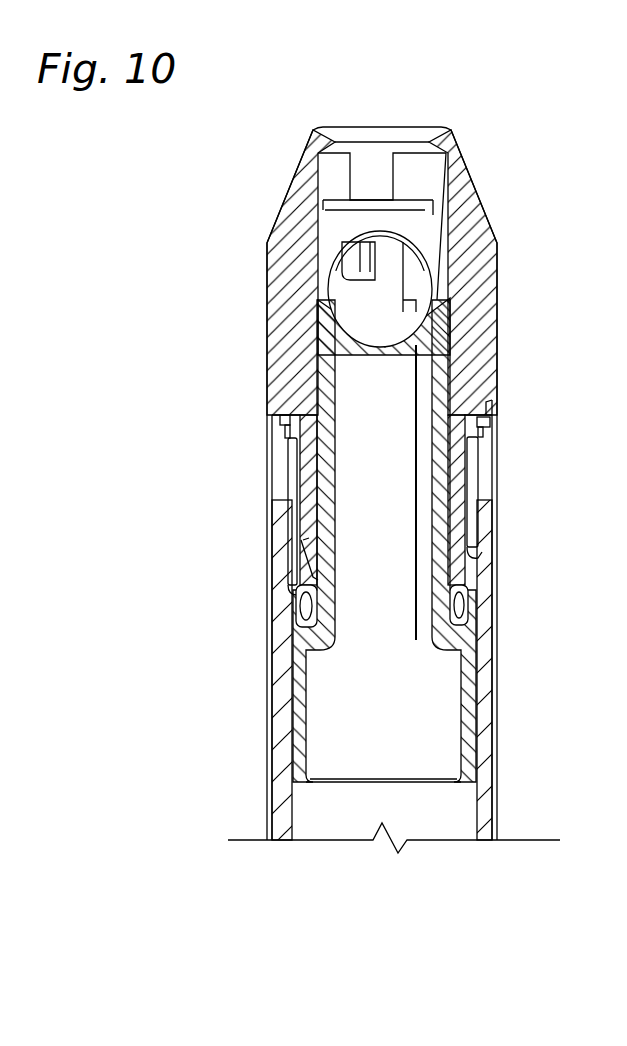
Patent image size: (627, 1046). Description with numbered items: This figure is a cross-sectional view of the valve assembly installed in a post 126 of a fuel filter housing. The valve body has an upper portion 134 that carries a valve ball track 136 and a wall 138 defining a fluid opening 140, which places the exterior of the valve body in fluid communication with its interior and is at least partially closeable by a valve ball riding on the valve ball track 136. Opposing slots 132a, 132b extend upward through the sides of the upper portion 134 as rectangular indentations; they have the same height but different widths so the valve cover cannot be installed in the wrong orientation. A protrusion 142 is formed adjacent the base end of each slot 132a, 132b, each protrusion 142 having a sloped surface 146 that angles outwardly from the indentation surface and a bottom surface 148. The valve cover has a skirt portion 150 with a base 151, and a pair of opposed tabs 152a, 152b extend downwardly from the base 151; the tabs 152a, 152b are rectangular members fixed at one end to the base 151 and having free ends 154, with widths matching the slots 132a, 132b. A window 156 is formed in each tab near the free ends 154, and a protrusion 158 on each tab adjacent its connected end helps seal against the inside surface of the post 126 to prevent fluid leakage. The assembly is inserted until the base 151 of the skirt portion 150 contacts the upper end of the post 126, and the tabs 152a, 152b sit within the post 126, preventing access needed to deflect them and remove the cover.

The post 126 is at (488, 740).
The slot 132a is at (300, 528).
The slot 132b is at (470, 530).
The upper portion 134 is at (463, 328).
The valve ball track 136 is at (383, 338).
The wall 138 is at (427, 237).
The fluid opening 140 is at (352, 293).
The protrusion 142 is at (486, 594).
The sloped surface 146 is at (302, 580).
The bottom surface 148 is at (298, 604).
The skirt portion 150 is at (270, 362).
The base 151 is at (493, 405).
The tab 152a is at (292, 500).
The tab 152b is at (472, 500).
The free end 154 is at (293, 622).
The window 156 is at (304, 556).
The protrusion 158 is at (280, 436).